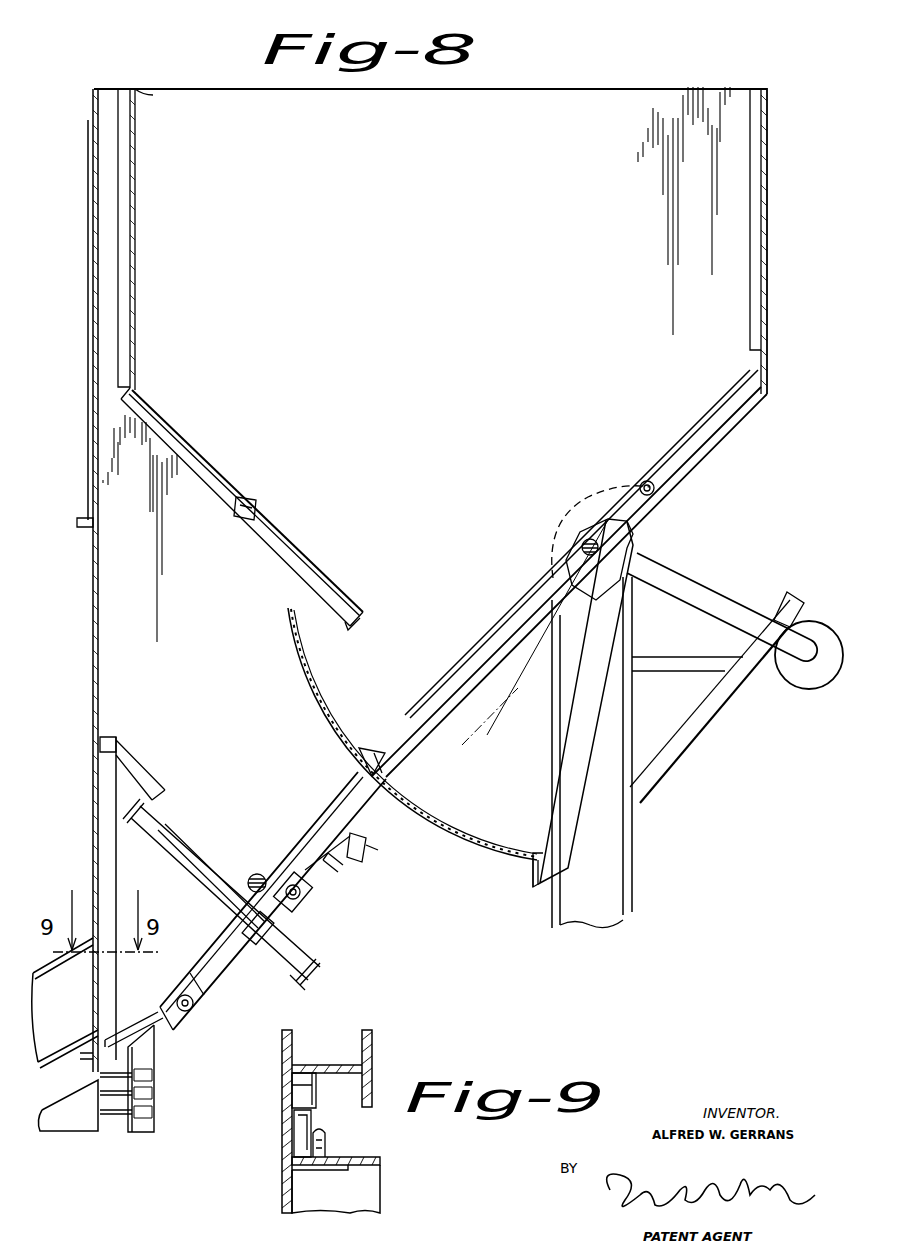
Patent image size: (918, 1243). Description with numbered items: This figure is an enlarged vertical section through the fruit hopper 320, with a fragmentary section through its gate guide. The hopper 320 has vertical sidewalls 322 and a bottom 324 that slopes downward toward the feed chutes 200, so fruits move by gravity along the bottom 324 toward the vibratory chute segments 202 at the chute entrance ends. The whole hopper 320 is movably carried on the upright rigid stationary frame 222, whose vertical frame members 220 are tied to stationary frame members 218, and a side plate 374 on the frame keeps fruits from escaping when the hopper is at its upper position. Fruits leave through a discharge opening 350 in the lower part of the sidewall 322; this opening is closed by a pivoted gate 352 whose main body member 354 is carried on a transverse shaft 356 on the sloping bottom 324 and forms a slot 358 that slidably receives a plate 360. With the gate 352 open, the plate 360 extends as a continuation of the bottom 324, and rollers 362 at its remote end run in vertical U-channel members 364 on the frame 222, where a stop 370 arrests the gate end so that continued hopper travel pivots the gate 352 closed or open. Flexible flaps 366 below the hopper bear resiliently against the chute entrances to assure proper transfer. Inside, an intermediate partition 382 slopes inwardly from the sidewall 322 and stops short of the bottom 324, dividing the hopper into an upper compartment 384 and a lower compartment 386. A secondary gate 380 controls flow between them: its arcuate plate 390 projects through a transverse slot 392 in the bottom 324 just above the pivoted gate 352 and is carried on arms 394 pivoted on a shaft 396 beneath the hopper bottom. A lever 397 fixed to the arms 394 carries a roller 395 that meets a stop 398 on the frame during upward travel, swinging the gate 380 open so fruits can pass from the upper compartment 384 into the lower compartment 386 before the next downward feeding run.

In FIG. 8, the hopper 320 is at (570, 86).
In FIG. 8, the vertical sidewalls 322 is at (136, 258).
In FIG. 8, the bottom 324 is at (688, 432).
In FIG. 8, the upper compartment 384 is at (178, 360).
In FIG. 8, the side plate 374 is at (93, 590).
In FIG. 9, the side plate 374 is at (282, 1196).
In FIG. 8, the lower compartment 386 is at (158, 676).
In FIG. 8, the intermediate partition 382 is at (240, 492).
In FIG. 8, the transverse slot 392 is at (355, 763).
In FIG. 8, the arcuate plate 390 is at (405, 804).
In FIG. 8, the arms 394 is at (578, 722).
In FIG. 8, the shaft 396 is at (580, 544).
In FIG. 8, the lever 397 is at (682, 585).
In FIG. 8, the roller 395 is at (826, 680).
In FIG. 8, the stop 398 is at (705, 722).
In FIG. 8, the secondary gate 380 is at (585, 810).
In FIG. 8, the stationary frame 222 is at (632, 855).
In FIG. 8, the discharge opening 350 is at (95, 858).
In FIG. 8, the transverse shaft 356 is at (256, 873).
In FIG. 8, the slot 358 is at (368, 842).
In FIG. 8, the main body member 354 is at (333, 872).
In FIG. 8, the pivoted gate 352 is at (305, 950).
In FIG. 8, the plate 360 is at (188, 816).
In FIG. 9, the plate 360 is at (375, 1174).
In FIG. 9, the U-channel members 364 is at (297, 1075).
In FIG. 9, the rollers 362 is at (297, 1097).
In FIG. 8, the stop 370 is at (152, 1040).
In FIG. 9, the stop 370 is at (312, 1086).
In FIG. 8, the flexible flaps 366 is at (155, 1105).
In FIG. 8, the stationary frame members 218 is at (63, 1018).
In FIG. 8, the feed chute 200 is at (42, 1138).
In FIG. 8, the vibratory chute segment 202 is at (78, 1128).
In FIG. 9, the vertical frame members 220 is at (372, 1068).